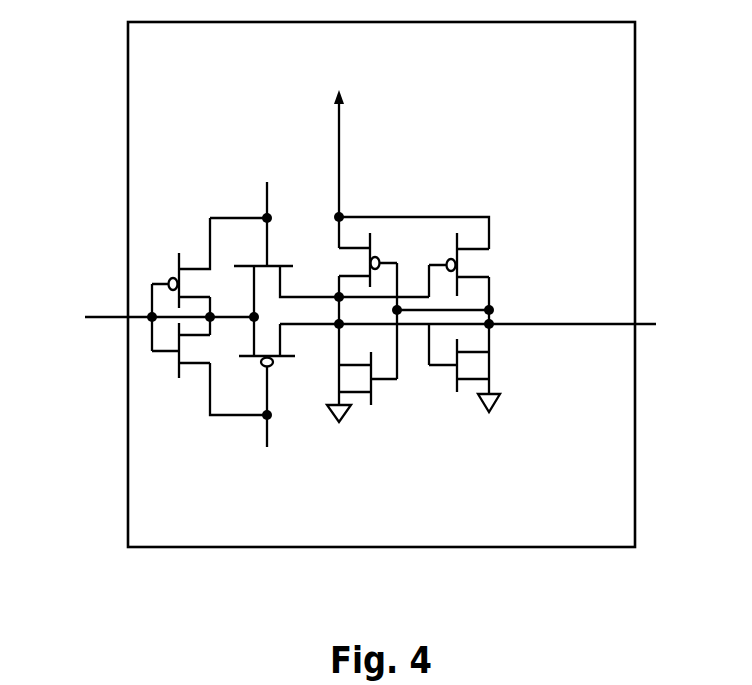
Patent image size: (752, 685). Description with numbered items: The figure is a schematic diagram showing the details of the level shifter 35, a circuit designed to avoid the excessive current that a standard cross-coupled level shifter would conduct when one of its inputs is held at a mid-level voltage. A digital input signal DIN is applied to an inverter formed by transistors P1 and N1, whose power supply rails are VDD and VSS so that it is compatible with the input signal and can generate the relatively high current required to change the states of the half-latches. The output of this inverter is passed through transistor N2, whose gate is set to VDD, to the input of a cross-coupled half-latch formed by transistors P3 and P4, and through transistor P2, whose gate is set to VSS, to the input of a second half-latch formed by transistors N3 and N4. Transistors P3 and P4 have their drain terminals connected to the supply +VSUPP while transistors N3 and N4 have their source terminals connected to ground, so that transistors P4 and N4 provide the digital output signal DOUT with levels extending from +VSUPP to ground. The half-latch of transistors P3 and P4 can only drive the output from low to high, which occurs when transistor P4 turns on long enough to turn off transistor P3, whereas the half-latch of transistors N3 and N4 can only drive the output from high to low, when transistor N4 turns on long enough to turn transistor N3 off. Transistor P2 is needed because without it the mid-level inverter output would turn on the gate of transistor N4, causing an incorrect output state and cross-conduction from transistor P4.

The level shifter 35 is at (167, 76).
The transistor P1 is at (181, 263).
The transistor N1 is at (181, 366).
The transistor N2 is at (264, 252).
The transistor P2 is at (268, 374).
The transistor P3 is at (371, 260).
The transistor P4 is at (457, 264).
The transistor N3 is at (368, 393).
The transistor N4 is at (459, 381).